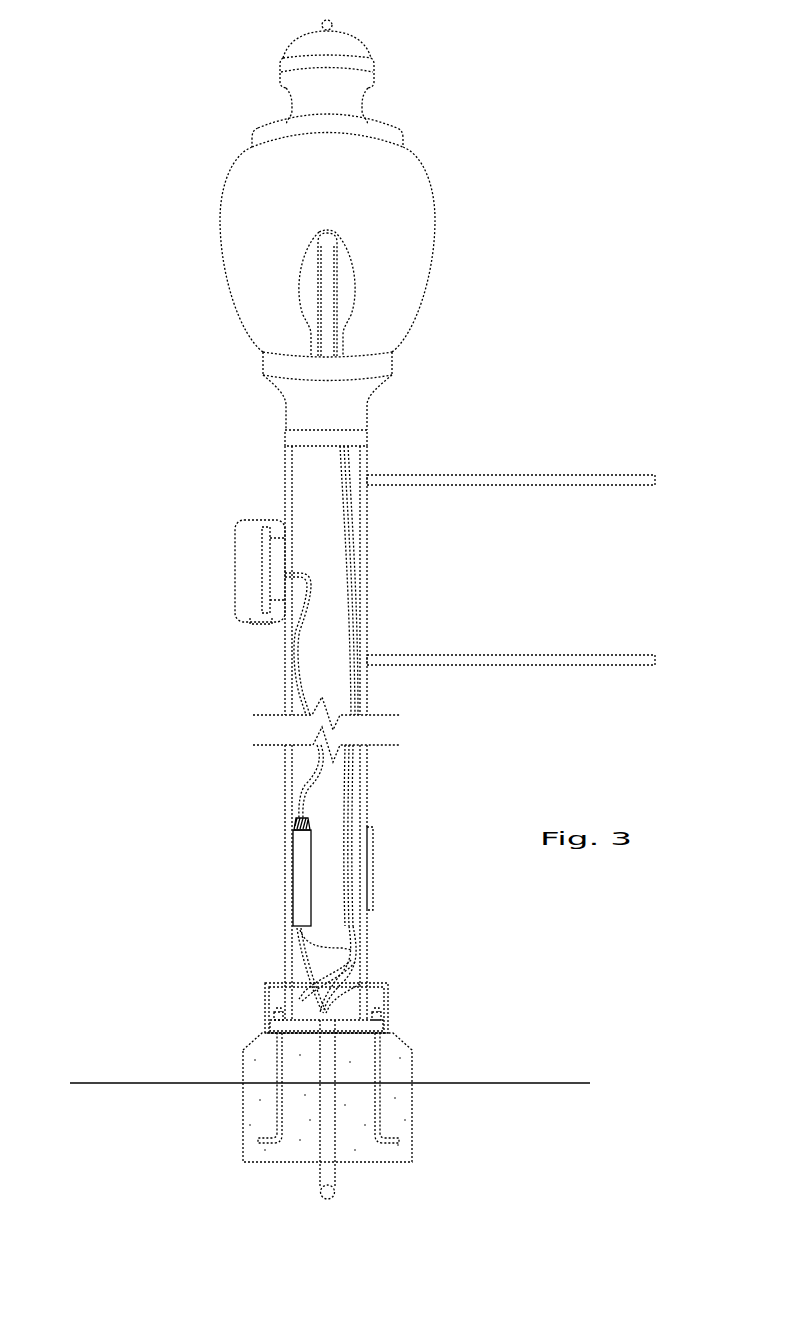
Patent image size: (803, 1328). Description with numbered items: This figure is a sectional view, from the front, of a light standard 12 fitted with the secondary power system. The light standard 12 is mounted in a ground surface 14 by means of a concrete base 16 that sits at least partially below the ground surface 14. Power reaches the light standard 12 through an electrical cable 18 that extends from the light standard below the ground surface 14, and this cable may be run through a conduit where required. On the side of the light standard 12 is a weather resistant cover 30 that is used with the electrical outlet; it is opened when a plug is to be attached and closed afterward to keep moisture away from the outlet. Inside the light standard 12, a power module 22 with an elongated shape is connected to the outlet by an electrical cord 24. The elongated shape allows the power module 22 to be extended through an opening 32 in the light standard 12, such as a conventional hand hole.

The light standard 12 is at (282, 963).
The ground surface 14 is at (108, 1083).
The concrete base 16 is at (243, 1108).
The electrical cable 18 is at (367, 675).
The power module 22 is at (292, 862).
The electrical cord 24 is at (305, 773).
The weather resistant cover 30 is at (235, 540).
The opening 32 is at (380, 910).